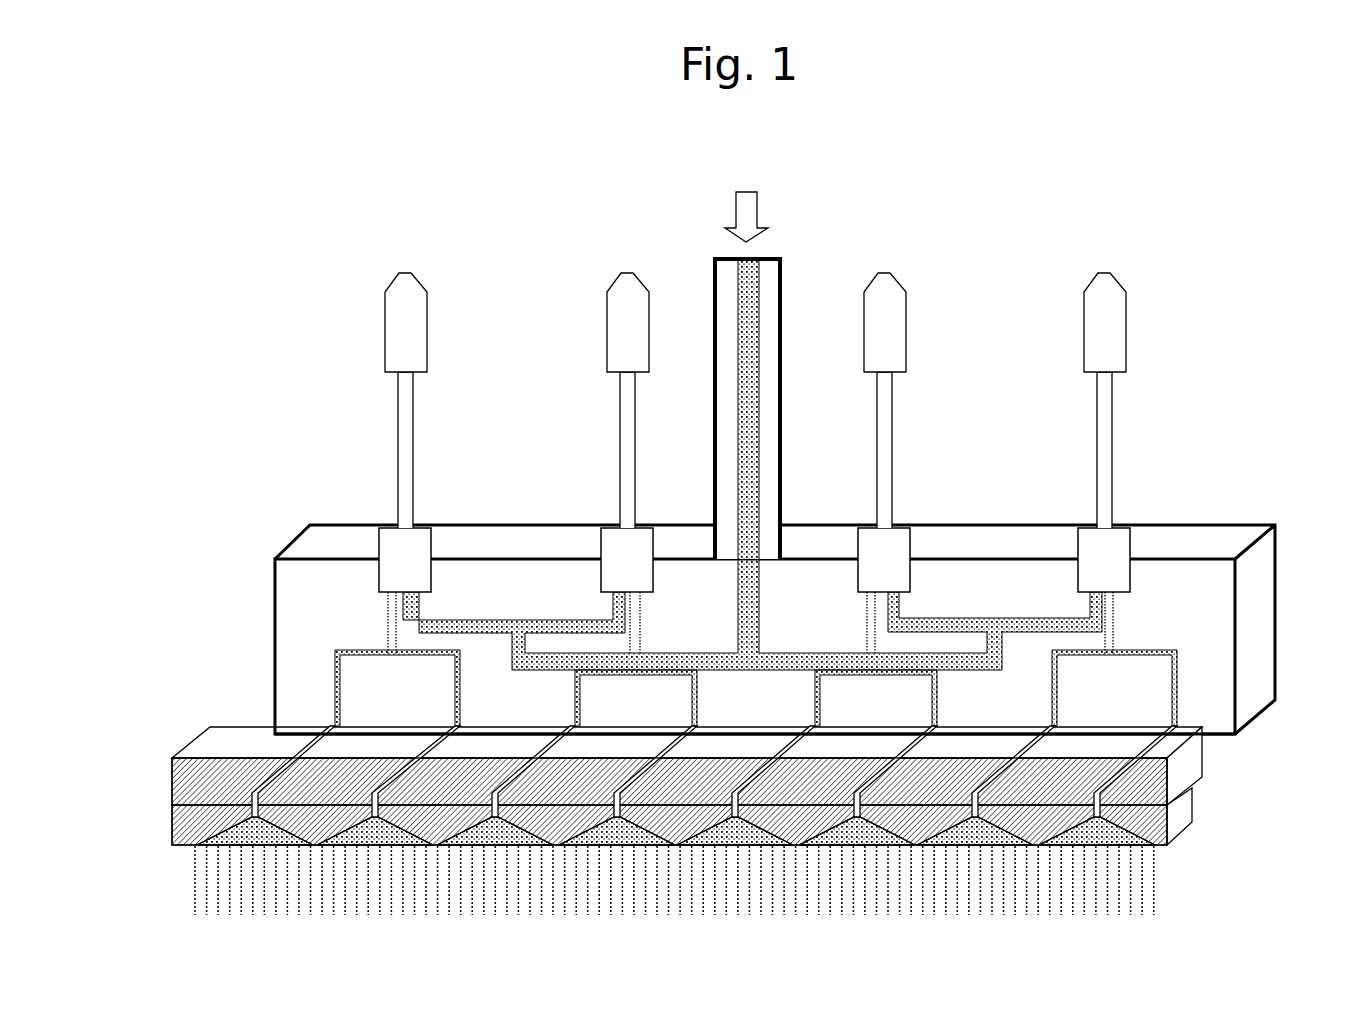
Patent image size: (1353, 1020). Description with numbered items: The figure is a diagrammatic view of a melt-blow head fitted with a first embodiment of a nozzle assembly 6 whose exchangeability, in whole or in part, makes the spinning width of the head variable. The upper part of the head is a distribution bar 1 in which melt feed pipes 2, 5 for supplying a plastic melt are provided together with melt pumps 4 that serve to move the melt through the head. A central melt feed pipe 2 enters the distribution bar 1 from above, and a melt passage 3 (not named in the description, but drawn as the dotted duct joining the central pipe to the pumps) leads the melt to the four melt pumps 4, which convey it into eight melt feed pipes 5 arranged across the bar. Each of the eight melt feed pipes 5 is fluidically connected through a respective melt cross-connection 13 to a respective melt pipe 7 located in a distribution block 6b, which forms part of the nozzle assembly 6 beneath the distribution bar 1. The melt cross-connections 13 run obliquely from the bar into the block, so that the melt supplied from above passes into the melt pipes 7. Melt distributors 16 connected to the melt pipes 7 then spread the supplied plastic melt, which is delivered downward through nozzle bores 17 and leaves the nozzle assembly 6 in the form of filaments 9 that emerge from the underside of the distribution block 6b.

The distribution bar 1 is at (1185, 543).
The melt feed pipe 2 is at (752, 352).
The ink distribution manifold 3 is at (752, 653).
The melt pump 4 is at (890, 572).
The melt feed pipe 5 is at (1177, 687).
The nozzle assembly 6 is at (1202, 763).
The distribution block 6b is at (1173, 820).
The melt pipe 7 is at (253, 805).
The filaments 9 is at (1135, 887).
The melt cross-connection 13 is at (300, 758).
The melt distributor 16 is at (257, 833).
The nozzle bore 17 is at (292, 847).